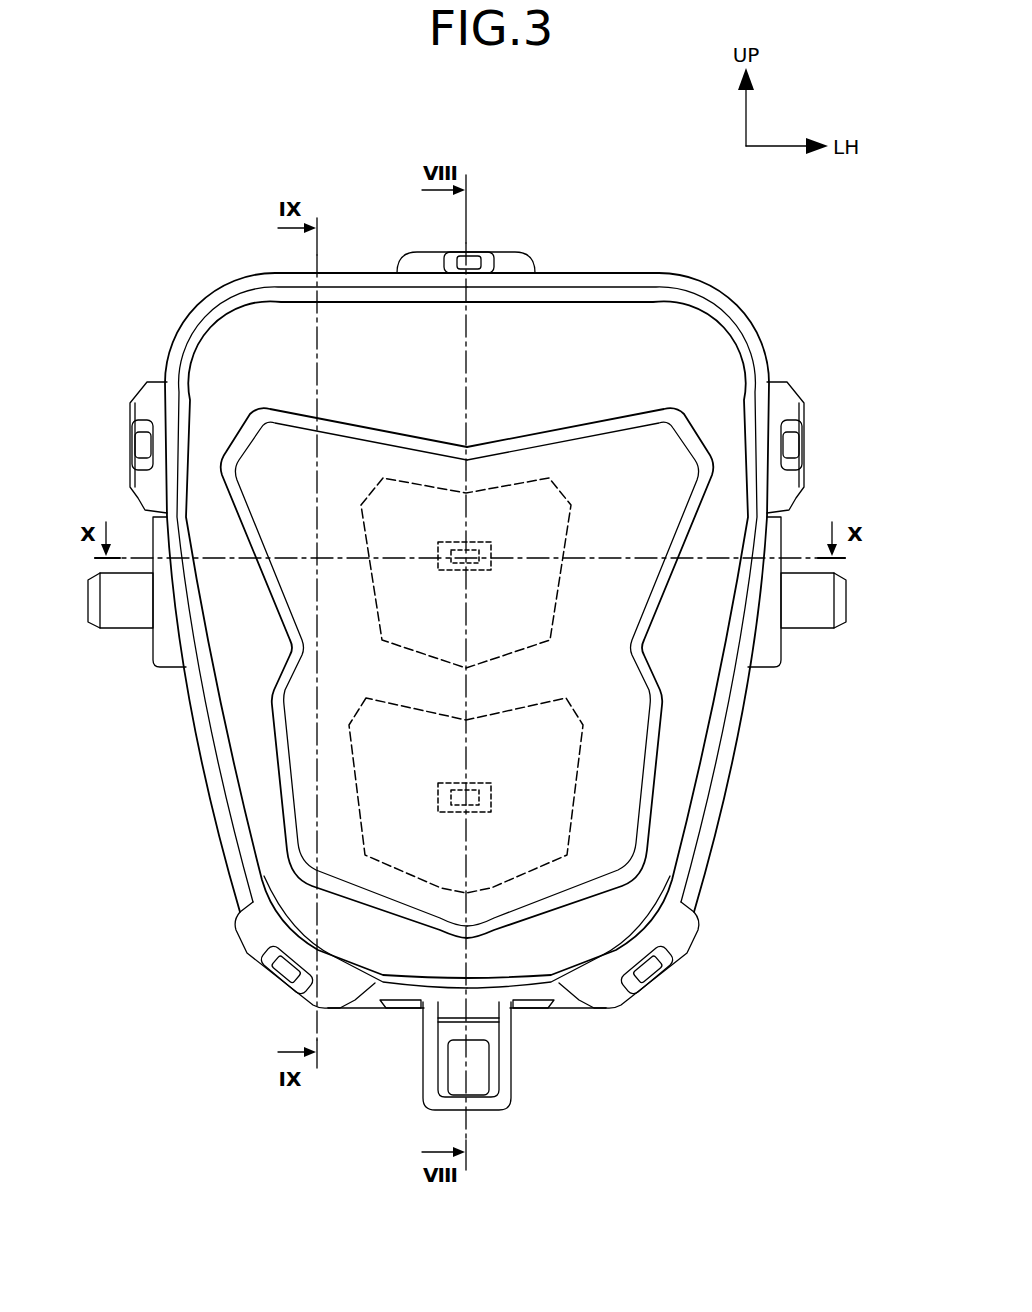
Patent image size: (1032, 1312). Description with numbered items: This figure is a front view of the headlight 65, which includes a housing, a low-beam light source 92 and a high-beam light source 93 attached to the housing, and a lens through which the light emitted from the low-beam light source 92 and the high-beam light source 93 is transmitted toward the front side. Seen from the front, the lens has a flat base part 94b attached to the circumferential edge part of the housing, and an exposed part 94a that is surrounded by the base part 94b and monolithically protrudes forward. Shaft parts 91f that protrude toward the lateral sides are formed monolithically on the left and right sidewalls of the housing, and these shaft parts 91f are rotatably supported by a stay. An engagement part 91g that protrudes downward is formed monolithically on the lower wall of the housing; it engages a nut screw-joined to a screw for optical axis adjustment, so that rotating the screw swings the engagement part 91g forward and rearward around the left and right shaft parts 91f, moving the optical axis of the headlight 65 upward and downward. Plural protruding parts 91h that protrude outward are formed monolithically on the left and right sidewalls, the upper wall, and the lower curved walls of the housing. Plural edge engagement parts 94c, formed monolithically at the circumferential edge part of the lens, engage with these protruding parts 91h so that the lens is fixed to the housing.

The headlight 65 is at (228, 238).
The shaft part 91f is at (133, 620).
The engagement part 91g is at (428, 1073).
The protruding part 91h is at (142, 442).
The low-beam light source 92 is at (474, 547).
The high-beam light source 93 is at (474, 812).
The exposed part 94a is at (613, 417).
The base part 94b is at (523, 363).
The edge engagement part 94c is at (153, 395).